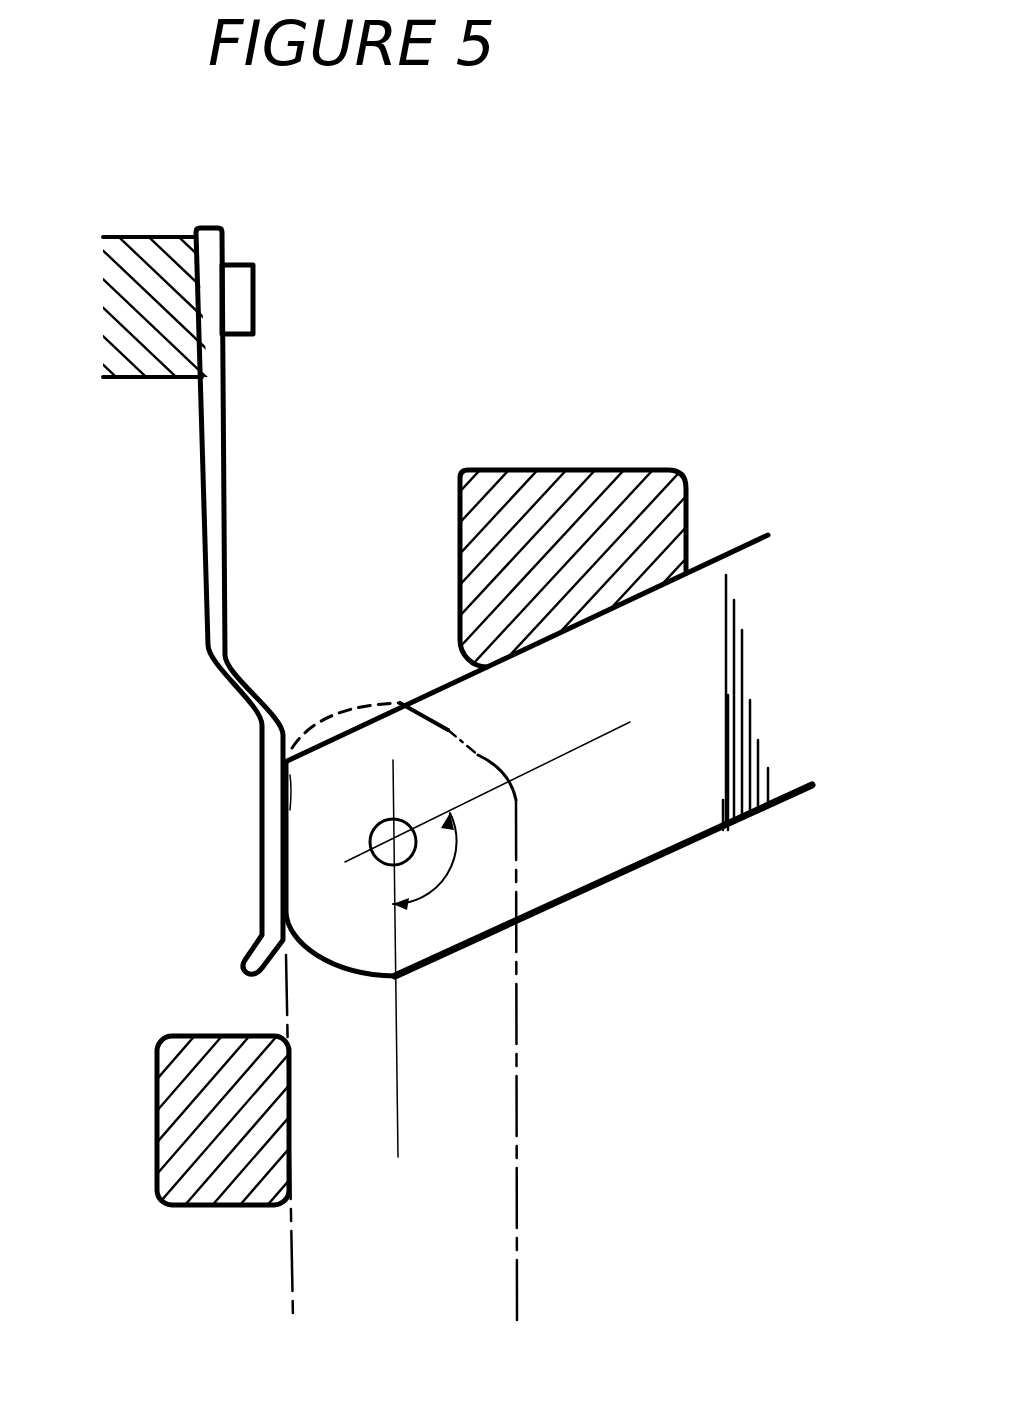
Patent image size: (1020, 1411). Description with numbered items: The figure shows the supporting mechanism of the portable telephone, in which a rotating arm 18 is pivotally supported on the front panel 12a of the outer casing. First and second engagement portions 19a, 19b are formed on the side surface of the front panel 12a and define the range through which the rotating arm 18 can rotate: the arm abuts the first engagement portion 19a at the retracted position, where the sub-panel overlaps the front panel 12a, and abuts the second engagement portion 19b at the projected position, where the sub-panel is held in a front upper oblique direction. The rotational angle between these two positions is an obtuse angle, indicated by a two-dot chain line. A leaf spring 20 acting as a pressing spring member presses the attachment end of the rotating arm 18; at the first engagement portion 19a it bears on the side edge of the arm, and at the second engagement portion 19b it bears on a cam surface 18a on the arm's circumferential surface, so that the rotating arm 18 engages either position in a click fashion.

The front panel 12a is at (140, 350).
The leaf spring 20 is at (238, 683).
The rotating arm 18 is at (697, 818).
The cam surface 18a is at (283, 818).
The first engagement portion 19a is at (178, 1070).
The second engagement portion 19b is at (573, 520).